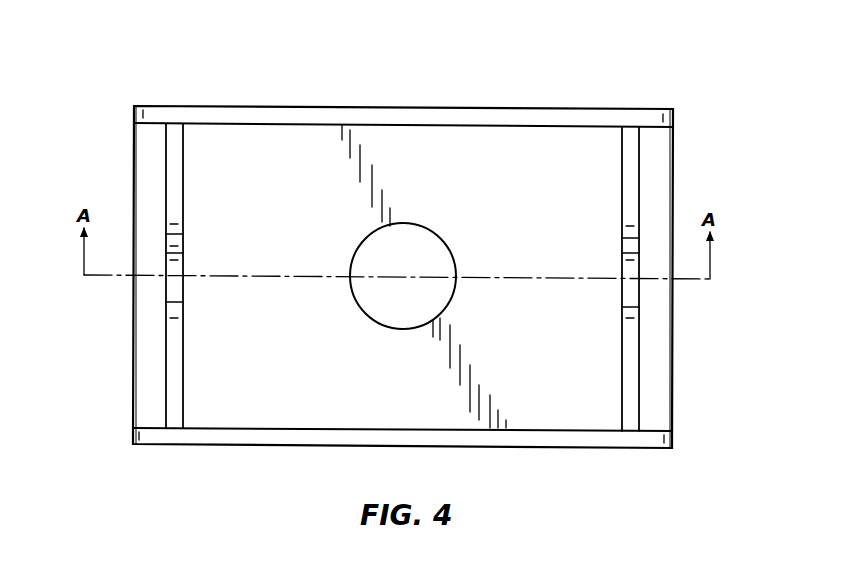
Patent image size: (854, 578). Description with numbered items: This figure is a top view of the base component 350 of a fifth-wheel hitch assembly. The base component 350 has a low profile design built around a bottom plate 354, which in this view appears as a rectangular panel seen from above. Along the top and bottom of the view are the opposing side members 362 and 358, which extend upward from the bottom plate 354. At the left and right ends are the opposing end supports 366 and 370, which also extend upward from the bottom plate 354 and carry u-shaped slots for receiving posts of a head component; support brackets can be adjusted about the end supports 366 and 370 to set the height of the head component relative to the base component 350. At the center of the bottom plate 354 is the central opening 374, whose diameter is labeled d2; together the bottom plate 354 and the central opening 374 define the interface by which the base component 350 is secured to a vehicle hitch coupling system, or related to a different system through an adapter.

The base component 350 is at (300, 104).
The side member 362 is at (584, 118).
The side member 358 is at (402, 460).
The end support 366 is at (178, 188).
The end support 370 is at (630, 382).
The bottom plate 354 is at (584, 184).
The central opening 374 is at (382, 308).
The aperture diameter d2 is at (441, 237).